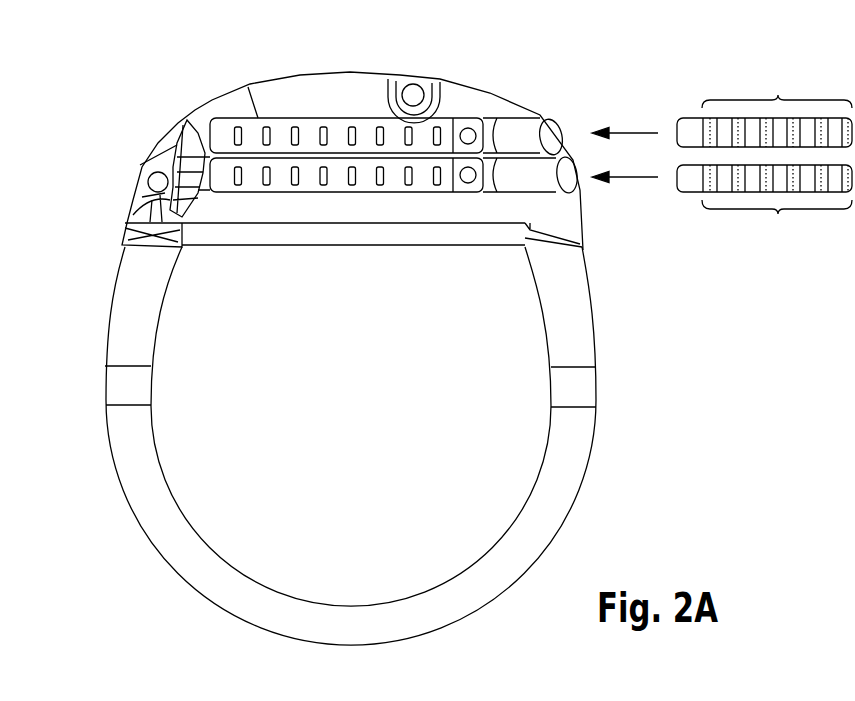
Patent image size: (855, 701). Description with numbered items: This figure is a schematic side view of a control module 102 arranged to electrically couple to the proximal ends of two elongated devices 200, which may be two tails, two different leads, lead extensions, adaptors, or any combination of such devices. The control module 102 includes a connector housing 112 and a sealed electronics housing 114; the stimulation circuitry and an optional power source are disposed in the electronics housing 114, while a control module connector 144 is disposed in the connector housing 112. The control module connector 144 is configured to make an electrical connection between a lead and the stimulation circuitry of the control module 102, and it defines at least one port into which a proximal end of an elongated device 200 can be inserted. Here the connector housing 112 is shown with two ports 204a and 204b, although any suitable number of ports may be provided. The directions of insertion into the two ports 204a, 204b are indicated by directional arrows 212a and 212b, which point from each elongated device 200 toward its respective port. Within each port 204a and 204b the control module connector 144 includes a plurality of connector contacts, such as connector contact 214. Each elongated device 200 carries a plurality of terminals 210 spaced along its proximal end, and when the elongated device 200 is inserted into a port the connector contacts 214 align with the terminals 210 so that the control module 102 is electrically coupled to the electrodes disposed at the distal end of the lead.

The control module 102 is at (329, 325).
The connector housing 112 is at (160, 107).
The sealed electronics housing 114 is at (82, 292).
The control module connector 144 is at (296, 118).
The connector contact 214 is at (238, 130).
The port 204a is at (553, 122).
The port 204b is at (585, 187).
The elongated device 200 is at (764, 153).
The terminals 210 is at (813, 92).
The directional arrow 212a is at (630, 131).
The directional arrow 212b is at (638, 180).